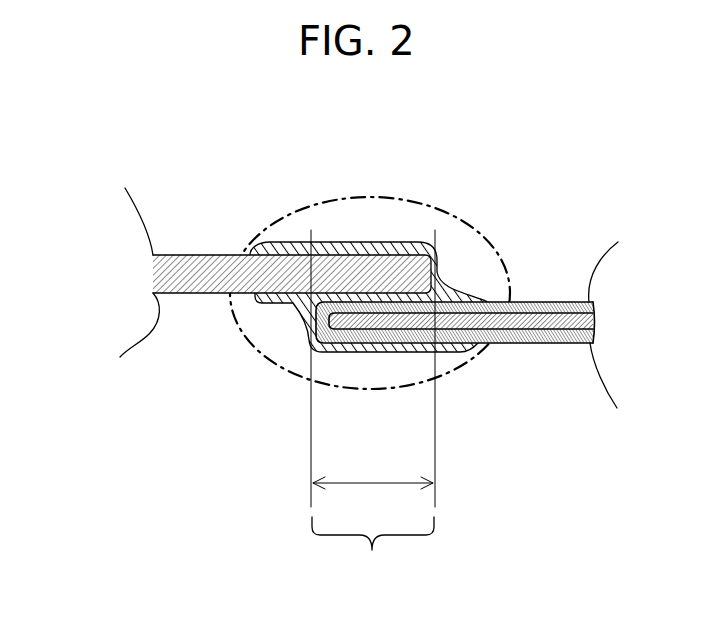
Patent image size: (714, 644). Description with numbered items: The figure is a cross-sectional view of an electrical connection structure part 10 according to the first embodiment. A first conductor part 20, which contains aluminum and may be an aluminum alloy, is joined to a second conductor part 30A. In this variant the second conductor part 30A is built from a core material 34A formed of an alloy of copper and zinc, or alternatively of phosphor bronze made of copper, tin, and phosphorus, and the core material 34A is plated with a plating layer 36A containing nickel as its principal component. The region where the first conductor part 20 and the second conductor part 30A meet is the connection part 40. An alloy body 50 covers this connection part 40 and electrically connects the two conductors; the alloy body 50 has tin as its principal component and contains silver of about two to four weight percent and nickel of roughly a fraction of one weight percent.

The electrical connection structure part 10 is at (463, 221).
The first conductor part 20 is at (182, 270).
The second conductor part 30A is at (471, 330).
The core material 34A is at (498, 343).
The plating layer 36A is at (570, 343).
The connection part 40 is at (373, 409).
The alloy body 50 is at (388, 242).